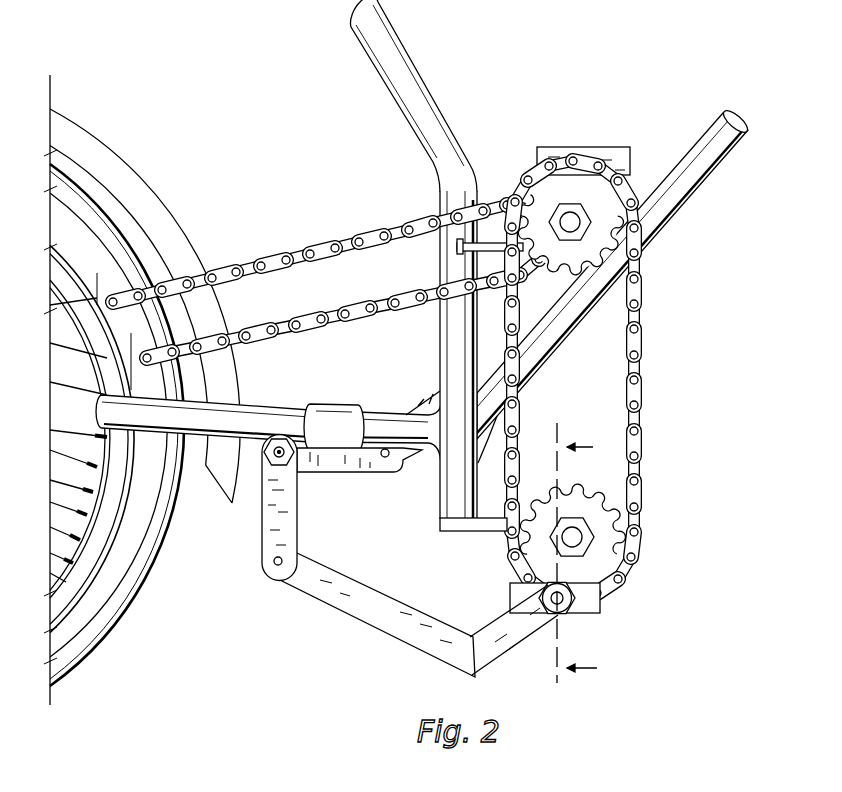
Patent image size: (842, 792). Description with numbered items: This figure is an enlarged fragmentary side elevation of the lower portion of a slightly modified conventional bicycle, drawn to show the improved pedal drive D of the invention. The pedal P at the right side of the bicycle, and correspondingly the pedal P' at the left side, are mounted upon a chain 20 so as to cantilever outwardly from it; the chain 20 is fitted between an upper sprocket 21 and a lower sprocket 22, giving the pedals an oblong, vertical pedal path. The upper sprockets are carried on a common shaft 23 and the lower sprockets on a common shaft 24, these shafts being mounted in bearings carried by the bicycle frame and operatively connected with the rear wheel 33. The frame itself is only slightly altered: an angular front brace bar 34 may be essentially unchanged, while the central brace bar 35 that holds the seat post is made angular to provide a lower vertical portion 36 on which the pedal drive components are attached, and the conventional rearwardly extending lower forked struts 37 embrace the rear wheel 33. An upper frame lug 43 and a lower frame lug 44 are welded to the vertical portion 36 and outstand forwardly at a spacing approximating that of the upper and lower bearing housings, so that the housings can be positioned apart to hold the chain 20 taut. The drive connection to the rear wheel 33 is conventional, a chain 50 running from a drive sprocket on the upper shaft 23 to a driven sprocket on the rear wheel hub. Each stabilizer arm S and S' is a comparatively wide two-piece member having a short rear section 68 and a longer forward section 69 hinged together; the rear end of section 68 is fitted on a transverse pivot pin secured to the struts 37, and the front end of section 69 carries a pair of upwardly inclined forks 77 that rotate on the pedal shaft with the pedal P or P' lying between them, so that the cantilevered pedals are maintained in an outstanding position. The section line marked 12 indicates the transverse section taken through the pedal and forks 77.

The chain 20 is at (637, 293).
The upper sprocket 21 is at (598, 249).
The lower sprocket 22 is at (613, 548).
The common shaft 23 is at (573, 224).
The common shaft 24 is at (576, 536).
The rear wheel 33 is at (137, 567).
The angular front brace bar 34 is at (713, 162).
The central brace bar 35 is at (397, 52).
The lower vertical portion 36 is at (455, 325).
The lower forked struts 37 is at (267, 417).
The upper frame lug 43 is at (458, 249).
The lower frame lug 44 is at (482, 527).
The chain 50 is at (347, 241).
The short rear section 68 is at (333, 462).
The forward section 69 is at (393, 623).
The forks 77 is at (530, 635).
The pedal P is at (576, 605).
The pedal P' is at (592, 139).
The pedal drive D is at (580, 125).
The stabilizer arm S is at (289, 623).
The stabilizer arm S' is at (413, 393).
The section line 12- 12 is at (581, 550).